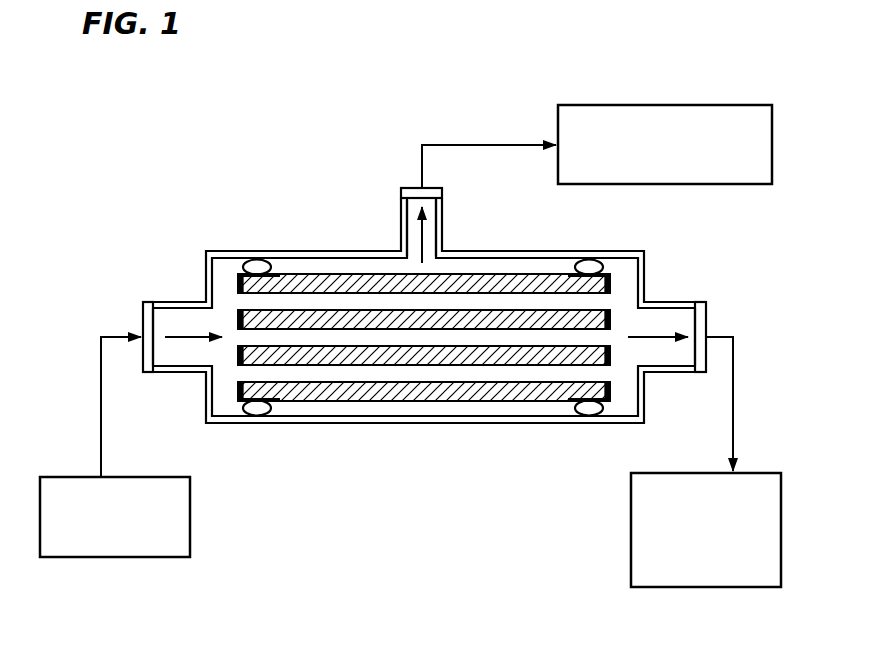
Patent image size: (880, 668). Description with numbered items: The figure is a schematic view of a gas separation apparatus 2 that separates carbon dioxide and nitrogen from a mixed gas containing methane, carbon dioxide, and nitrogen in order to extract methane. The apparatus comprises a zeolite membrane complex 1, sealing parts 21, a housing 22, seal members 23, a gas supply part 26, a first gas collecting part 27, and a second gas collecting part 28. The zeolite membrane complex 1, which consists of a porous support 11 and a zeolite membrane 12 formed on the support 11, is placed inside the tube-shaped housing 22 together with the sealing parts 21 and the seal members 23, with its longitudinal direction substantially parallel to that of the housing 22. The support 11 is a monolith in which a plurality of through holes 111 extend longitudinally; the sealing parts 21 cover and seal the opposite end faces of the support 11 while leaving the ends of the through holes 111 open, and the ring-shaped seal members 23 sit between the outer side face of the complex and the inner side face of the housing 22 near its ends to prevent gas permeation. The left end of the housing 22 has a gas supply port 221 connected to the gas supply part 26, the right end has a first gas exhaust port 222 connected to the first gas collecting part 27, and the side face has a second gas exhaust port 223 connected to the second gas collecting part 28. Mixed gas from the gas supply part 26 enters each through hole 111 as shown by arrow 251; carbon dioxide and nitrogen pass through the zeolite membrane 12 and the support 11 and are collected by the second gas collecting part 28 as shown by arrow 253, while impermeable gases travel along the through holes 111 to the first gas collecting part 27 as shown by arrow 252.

The zeolite membrane complex 1 is at (233, 400).
The gas separation apparatus 2 is at (167, 135).
The support 11 is at (495, 398).
The zeolite membrane 12 is at (403, 323).
The sealing part 21 is at (238, 288).
The housing 22 is at (513, 251).
The seal member 23 is at (257, 265).
The gas supply part 26 is at (190, 520).
The first gas collecting part 27 is at (631, 530).
The second gas collecting part 28 is at (665, 105).
The through hole 111 is at (305, 342).
The gas supply port 221 is at (167, 309).
The first gas exhaust port 222 is at (681, 311).
The second gas exhaust port 223 is at (407, 212).
The arrow 251 is at (178, 340).
The arrow 252 is at (658, 340).
The arrow 253 is at (420, 239).